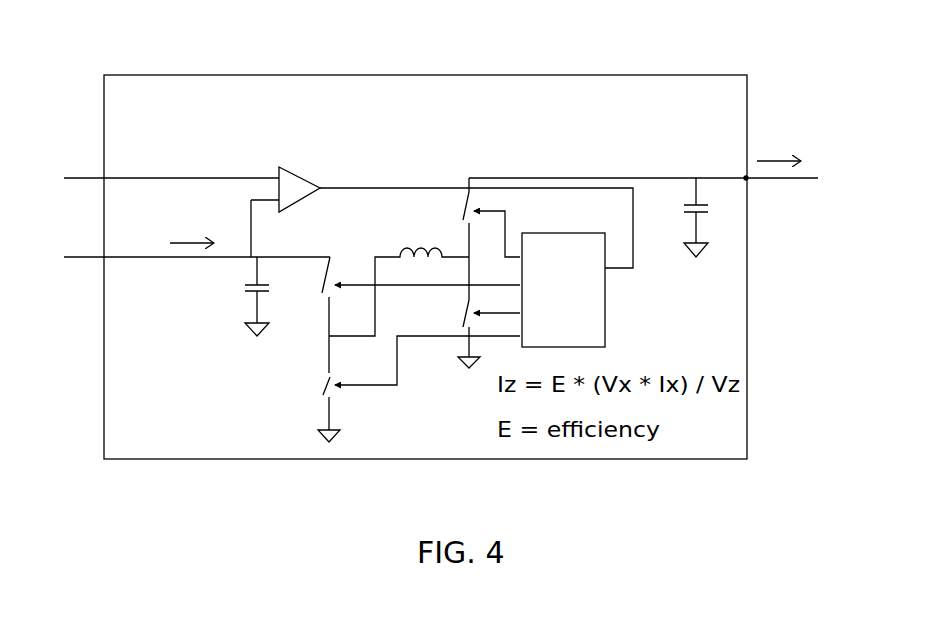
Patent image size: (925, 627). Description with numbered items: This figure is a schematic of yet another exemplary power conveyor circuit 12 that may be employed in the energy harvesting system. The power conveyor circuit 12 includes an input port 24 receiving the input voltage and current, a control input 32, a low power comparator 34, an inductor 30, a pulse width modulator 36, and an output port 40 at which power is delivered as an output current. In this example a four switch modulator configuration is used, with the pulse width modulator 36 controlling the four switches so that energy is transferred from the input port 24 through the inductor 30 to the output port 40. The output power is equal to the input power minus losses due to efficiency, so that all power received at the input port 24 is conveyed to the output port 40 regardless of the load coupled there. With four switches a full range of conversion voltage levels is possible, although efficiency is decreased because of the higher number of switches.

The power conveyor circuit 12 is at (389, 55).
The input port 24 is at (109, 265).
The inductor 30 is at (410, 233).
The control input 32 is at (110, 172).
The low power comparator 34 is at (303, 164).
The pulse width modulator 36 is at (575, 304).
The output port 40 is at (741, 172).